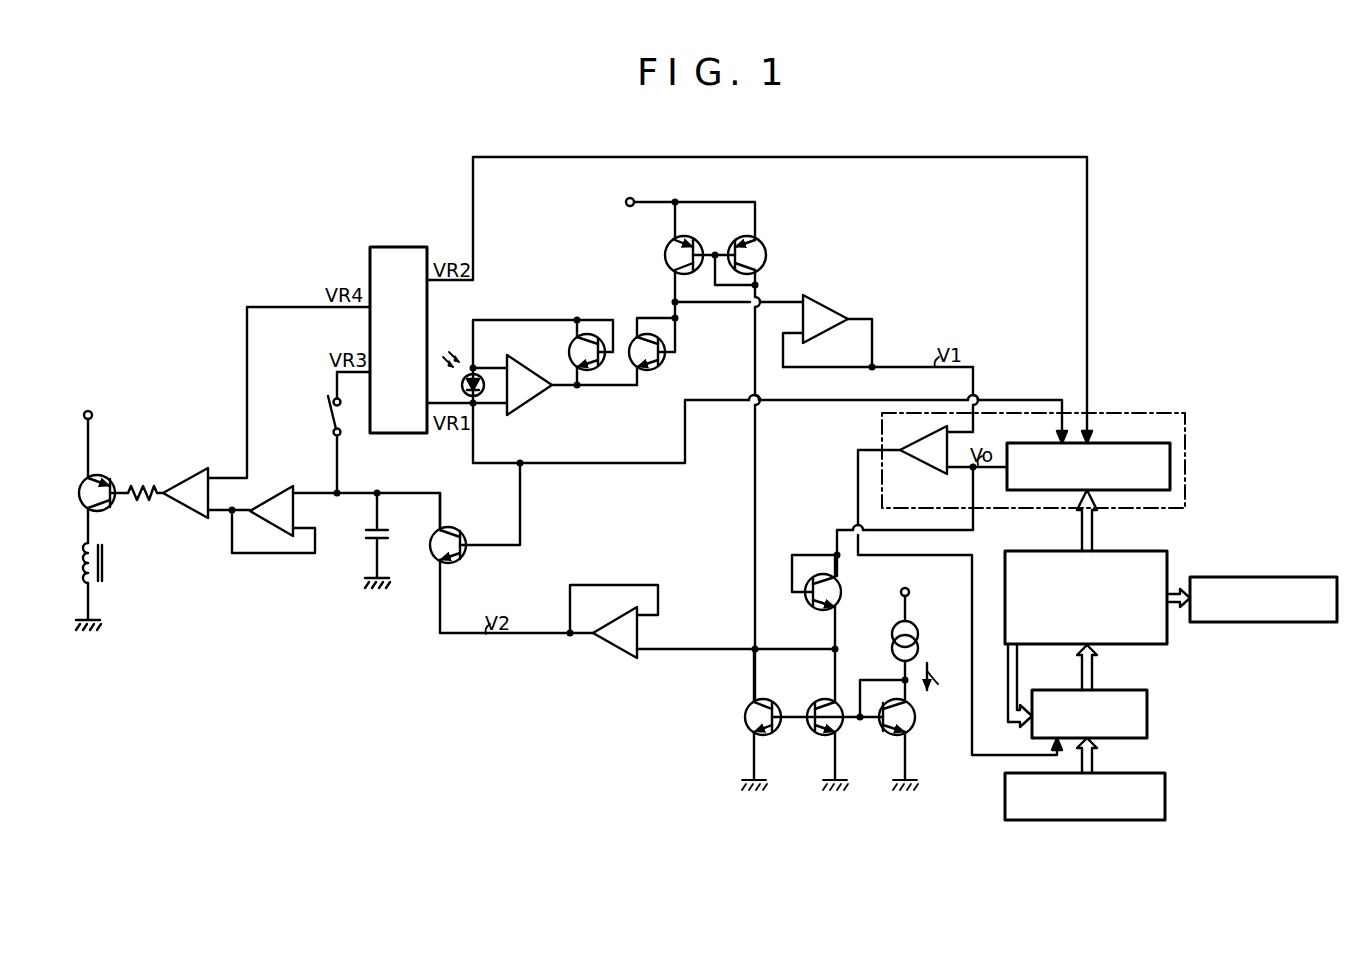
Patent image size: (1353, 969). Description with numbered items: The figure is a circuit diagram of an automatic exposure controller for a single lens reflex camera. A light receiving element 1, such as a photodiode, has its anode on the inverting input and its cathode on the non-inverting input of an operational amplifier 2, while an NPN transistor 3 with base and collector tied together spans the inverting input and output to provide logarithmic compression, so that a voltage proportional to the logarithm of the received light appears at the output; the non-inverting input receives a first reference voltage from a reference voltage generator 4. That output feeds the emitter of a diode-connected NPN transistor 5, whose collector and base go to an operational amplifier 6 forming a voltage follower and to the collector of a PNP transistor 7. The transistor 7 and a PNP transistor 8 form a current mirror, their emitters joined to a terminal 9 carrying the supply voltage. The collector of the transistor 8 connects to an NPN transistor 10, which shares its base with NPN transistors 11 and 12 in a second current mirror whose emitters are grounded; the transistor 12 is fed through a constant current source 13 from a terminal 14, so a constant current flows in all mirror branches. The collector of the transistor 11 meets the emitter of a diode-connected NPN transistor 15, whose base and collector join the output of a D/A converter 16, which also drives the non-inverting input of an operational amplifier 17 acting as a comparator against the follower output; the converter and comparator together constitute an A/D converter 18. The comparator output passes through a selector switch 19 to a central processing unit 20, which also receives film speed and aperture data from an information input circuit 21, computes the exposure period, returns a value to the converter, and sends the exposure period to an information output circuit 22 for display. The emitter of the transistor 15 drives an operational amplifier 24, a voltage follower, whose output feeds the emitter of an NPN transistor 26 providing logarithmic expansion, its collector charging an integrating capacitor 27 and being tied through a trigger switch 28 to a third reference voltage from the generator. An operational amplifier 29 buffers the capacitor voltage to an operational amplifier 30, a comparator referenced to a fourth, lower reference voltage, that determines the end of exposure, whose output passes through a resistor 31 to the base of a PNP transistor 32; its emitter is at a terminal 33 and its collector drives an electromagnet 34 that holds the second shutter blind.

The light receiving element 1 is at (484, 386).
The operational amplifier 2 is at (534, 374).
The NPN transistor 3 is at (602, 366).
The reference voltage generator 4 is at (427, 318).
The NPN transistor 5 is at (662, 366).
The operational amplifier 6 is at (834, 312).
The PNP transistor 7 is at (690, 243).
The PNP transistor 8 is at (760, 243).
The terminal 9 is at (628, 206).
The NPN transistor 10 is at (745, 718).
The NPN transistor 11 is at (837, 736).
The NPN transistor 12 is at (910, 734).
The constant current source 13 is at (892, 639).
The terminal 14 is at (909, 595).
The NPN transistor 15 is at (841, 592).
The D/A converter 16 is at (1139, 435).
The operational amplifier 17 is at (922, 464).
The A/D converter 18 is at (1124, 413).
The selector switch 19 is at (1147, 727).
The central processing unit 20 is at (1154, 551).
The information input circuit 21 is at (1165, 790).
The information output circuit 22 is at (1313, 577).
The operational amplifier 24 is at (612, 646).
The NPN transistor 26 is at (463, 560).
The integrating capacitor 27 is at (386, 534).
The trigger switch 28 is at (331, 417).
The operational amplifier 29 is at (293, 513).
The operational amplifier 30 is at (208, 492).
The resistor 31 is at (145, 479).
The PNP transistor 32 is at (108, 508).
The terminal 33 is at (92, 418).
The electromagnet 34 is at (104, 566).